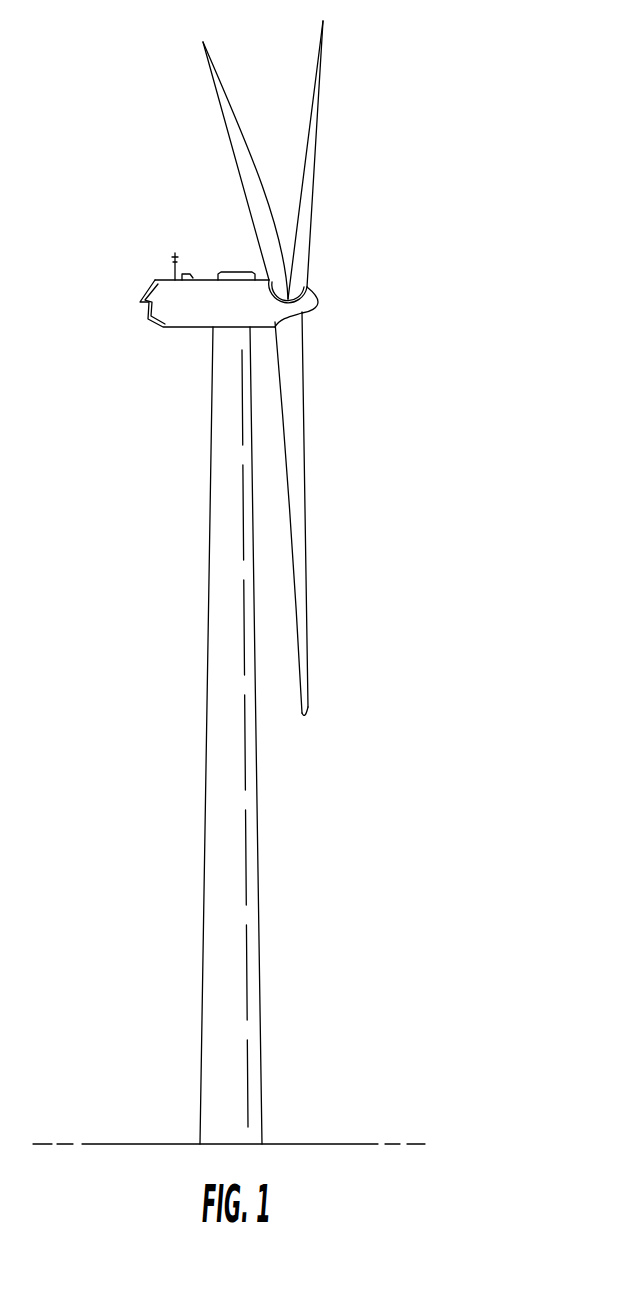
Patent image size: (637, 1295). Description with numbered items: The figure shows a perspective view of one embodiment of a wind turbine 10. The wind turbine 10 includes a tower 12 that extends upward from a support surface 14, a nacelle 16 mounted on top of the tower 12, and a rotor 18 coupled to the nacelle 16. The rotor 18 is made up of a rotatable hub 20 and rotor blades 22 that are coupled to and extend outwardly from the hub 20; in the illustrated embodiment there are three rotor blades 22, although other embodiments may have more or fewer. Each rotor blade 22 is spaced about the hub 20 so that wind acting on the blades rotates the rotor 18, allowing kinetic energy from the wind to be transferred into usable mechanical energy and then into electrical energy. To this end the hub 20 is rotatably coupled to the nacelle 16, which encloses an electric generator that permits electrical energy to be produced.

The wind turbine 10 is at (433, 197).
The tower 12 is at (233, 860).
The support surface 14 is at (170, 1143).
The nacelle 16 is at (180, 319).
The rotor 18 is at (320, 287).
The rotatable hub 20 is at (315, 300).
The rotor blade 22 is at (226, 98).